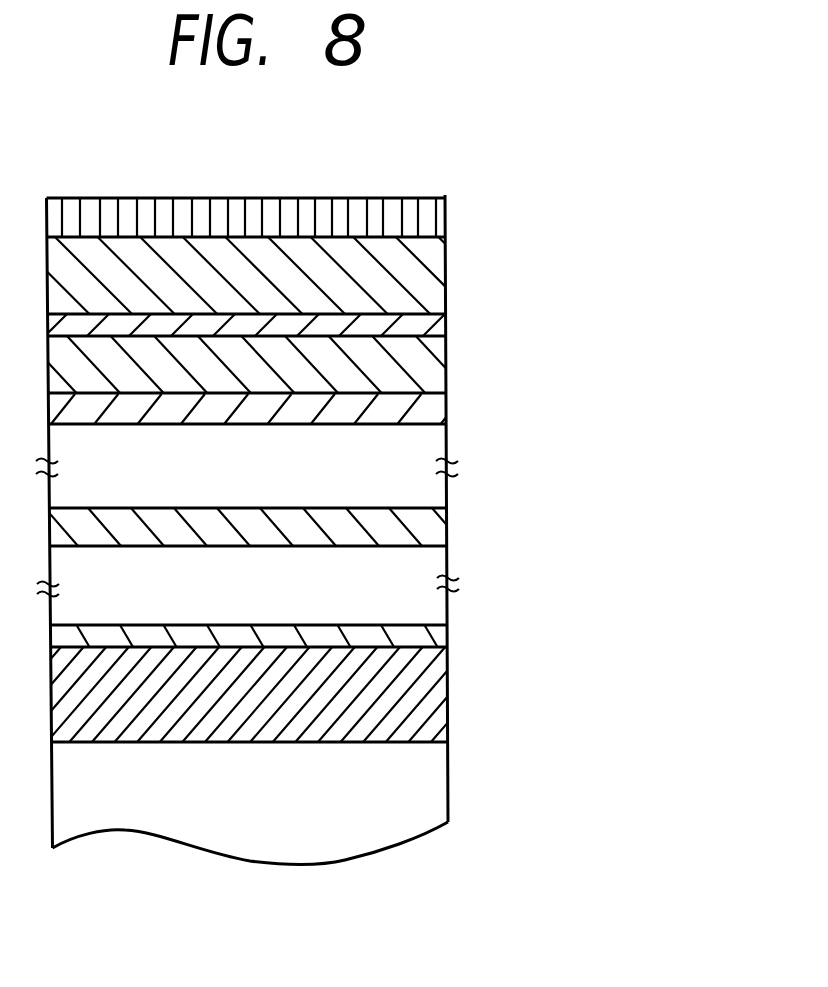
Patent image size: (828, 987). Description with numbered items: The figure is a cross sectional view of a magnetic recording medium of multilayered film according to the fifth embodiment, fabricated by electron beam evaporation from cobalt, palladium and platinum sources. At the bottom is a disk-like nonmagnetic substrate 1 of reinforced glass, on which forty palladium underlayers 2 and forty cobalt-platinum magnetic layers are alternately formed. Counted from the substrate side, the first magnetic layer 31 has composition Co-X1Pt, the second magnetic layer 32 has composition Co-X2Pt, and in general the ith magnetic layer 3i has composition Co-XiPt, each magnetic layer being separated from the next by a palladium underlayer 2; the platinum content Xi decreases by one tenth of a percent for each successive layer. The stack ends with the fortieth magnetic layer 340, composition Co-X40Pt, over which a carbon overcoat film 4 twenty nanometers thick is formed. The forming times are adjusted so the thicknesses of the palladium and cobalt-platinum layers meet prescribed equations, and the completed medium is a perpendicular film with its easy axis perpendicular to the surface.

The nonmagnetic substrate 1 is at (423, 773).
The underlayer 2 is at (422, 323).
The first magnetic layer 31 is at (410, 635).
The second magnetic layer 32 is at (423, 528).
The ith magnetic layer 3i is at (420, 370).
The fortieth magnetic layer 340 is at (415, 280).
The carbon overcoat film 4 is at (428, 213).